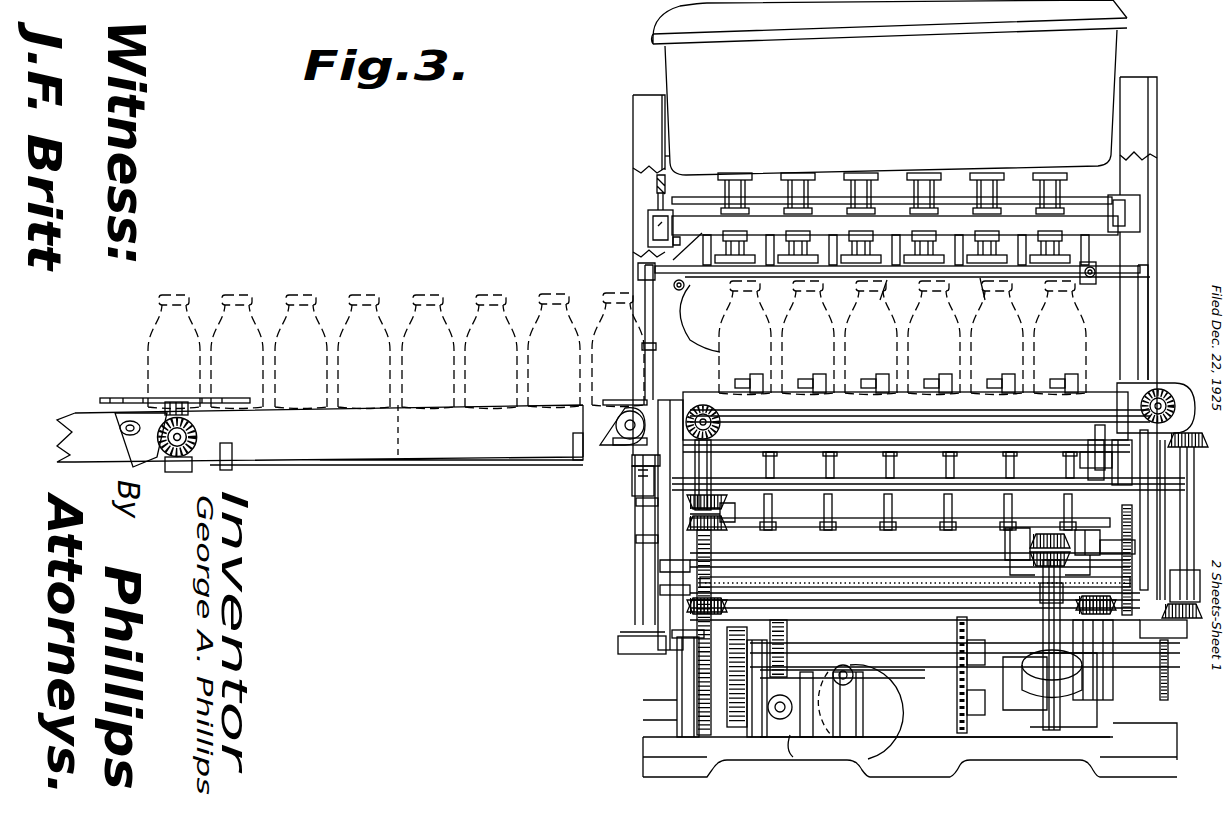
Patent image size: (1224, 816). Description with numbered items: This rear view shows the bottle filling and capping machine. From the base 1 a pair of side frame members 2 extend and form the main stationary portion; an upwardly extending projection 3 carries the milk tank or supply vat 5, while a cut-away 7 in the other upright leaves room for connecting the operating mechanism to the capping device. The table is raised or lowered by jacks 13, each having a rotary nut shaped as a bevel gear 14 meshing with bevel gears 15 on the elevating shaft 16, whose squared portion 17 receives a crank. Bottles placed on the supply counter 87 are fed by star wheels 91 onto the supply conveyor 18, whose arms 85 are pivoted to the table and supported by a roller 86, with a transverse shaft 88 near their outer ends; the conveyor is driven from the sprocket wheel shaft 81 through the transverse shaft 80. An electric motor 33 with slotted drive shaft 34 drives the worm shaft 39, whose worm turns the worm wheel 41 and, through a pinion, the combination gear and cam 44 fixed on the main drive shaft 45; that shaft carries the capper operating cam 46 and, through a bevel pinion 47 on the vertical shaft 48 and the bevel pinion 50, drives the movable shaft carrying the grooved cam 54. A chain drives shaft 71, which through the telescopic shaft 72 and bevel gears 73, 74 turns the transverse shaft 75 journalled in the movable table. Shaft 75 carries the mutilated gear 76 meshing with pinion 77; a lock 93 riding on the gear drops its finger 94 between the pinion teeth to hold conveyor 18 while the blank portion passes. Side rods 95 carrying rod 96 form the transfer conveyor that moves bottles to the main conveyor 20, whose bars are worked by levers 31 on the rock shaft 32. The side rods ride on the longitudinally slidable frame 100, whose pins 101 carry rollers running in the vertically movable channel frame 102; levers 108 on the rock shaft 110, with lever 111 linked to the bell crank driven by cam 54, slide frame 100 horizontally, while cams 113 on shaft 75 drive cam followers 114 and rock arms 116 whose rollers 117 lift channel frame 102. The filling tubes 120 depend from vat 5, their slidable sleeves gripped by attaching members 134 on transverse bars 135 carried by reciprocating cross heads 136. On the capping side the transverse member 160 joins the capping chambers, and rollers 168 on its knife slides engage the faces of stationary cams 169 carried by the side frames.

The base 1 is at (645, 777).
The side frame members 2 is at (655, 738).
The upwardly extending projection 3 is at (634, 130).
The milk tank or supply vat 5 is at (690, 84).
The cut away 7 is at (866, 268).
The jacks 13 is at (665, 708).
The rotary nut bevel gear 14 is at (700, 690).
The bevel gears 15 is at (732, 590).
The elevating shaft 16 is at (910, 700).
The squared portion 17 is at (640, 644).
The supply conveyor 18 is at (623, 392).
The main conveyor 20 is at (950, 374).
The levers 31 is at (888, 500).
The rock shaft 32 is at (900, 533).
The electric motor 33 is at (875, 735).
The slotted drive shaft 34 is at (853, 676).
The worm shaft 39 is at (790, 720).
The worm wheel 41 is at (800, 638).
The gear 44 is at (742, 730).
The main stationary drive shaft 45 is at (882, 660).
The capper operating cam 46 is at (1108, 665).
The bevel pinion 47 is at (1195, 618).
The vertical shaft 48 is at (1188, 548).
The bevel pinion 50 is at (1187, 448).
The cam 54 is at (1090, 450).
The shaft 71 is at (940, 660).
The telescopic shaft 72 is at (1050, 622).
The bevel gear 73 is at (1070, 555).
The bevel gear 74 is at (1030, 538).
The transverse shaft 75 is at (893, 548).
The mutilated gear 76 is at (700, 530).
The pinion 77 is at (720, 501).
The transverse shaft 80 is at (918, 418).
The sprocket wheel shaft 81 is at (1162, 402).
The arms 85 is at (474, 448).
The supporting roller 86 is at (598, 440).
The supply counter 87 is at (84, 430).
The transverse shaft 88 is at (197, 437).
The star wheels 91 is at (115, 396).
The lock 93 is at (718, 425).
The finger 94 is at (706, 452).
The side rods 95 is at (700, 287).
The rod 96 is at (983, 300).
The longitudinally slidable frame 100 is at (652, 346).
The pins 101 is at (634, 466).
The vertically movable channel bar or frame 102 is at (676, 450).
The lever 108 is at (640, 503).
The rock shaft 110 is at (882, 480).
The lever 111 is at (1108, 455).
The cams 113 is at (682, 565).
The cam followers or levers 114 is at (670, 598).
The rock arms 116 is at (660, 540).
The rollers 117 is at (660, 514).
The bottle filling tubes 120 is at (1030, 185).
The attaching members 134 is at (828, 210).
The transverse bars 135 is at (692, 220).
The cross heads 136 is at (660, 238).
The transverse plate or member 160 is at (866, 304).
The rollers 168 is at (717, 323).
The cams 169 is at (1118, 272).